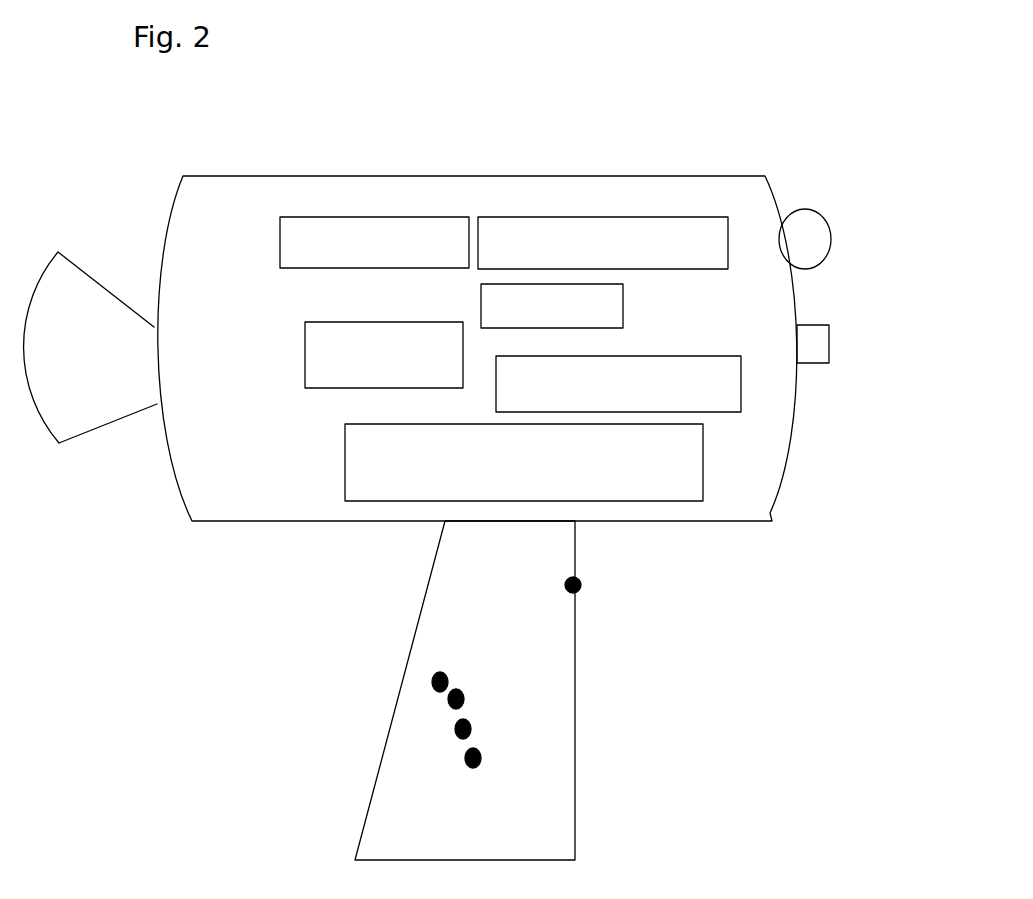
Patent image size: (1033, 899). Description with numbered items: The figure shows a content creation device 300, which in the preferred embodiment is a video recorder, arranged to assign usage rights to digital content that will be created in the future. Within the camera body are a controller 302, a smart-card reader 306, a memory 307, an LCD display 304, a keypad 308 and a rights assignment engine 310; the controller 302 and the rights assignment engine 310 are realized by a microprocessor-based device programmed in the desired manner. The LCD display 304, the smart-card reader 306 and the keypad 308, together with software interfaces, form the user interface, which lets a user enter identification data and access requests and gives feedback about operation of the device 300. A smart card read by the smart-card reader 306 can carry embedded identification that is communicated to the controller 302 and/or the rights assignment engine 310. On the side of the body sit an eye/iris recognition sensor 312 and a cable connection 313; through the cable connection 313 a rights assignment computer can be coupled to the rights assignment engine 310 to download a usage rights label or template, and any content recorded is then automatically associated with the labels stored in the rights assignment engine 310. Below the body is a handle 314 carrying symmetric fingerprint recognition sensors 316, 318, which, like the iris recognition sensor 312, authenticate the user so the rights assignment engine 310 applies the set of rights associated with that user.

The content creation device 300 is at (189, 682).
The controller 302 is at (280, 240).
The LCD display 304 is at (305, 353).
The smart-card reader 306 is at (625, 216).
The memory 307 is at (623, 307).
The keypad 308 is at (630, 356).
The rights assignment engine 310 is at (345, 458).
The eye/iris recognition sensor 312 is at (801, 209).
The cable connection 313 is at (829, 363).
The handle 314 is at (575, 708).
The fingerprint recognition sensor 316 is at (581, 583).
The fingerprint recognition sensors 318 is at (473, 758).